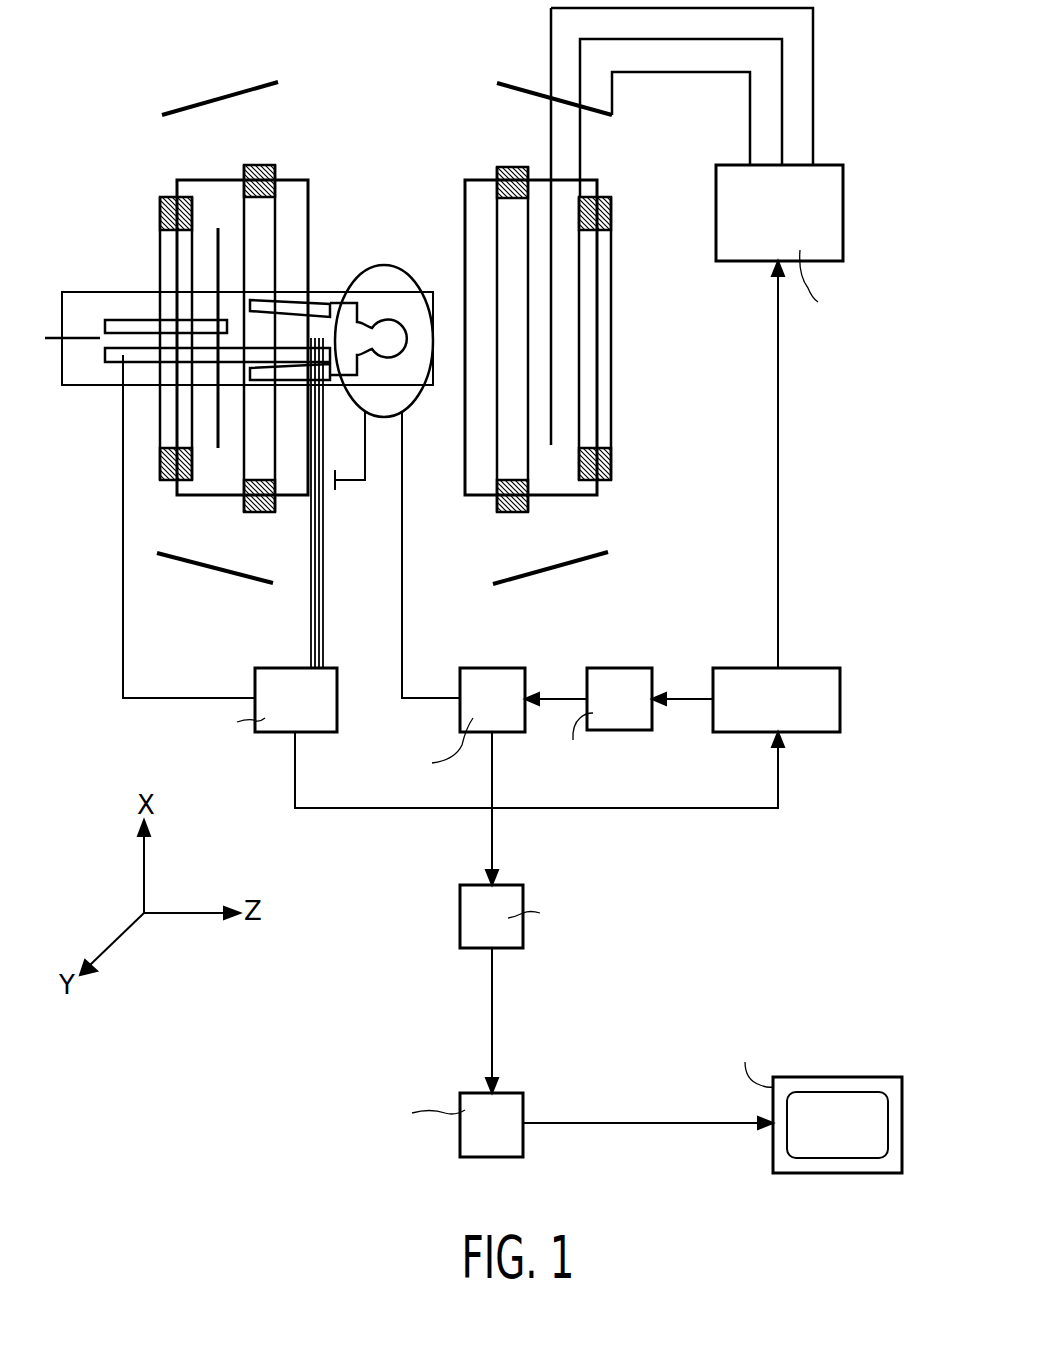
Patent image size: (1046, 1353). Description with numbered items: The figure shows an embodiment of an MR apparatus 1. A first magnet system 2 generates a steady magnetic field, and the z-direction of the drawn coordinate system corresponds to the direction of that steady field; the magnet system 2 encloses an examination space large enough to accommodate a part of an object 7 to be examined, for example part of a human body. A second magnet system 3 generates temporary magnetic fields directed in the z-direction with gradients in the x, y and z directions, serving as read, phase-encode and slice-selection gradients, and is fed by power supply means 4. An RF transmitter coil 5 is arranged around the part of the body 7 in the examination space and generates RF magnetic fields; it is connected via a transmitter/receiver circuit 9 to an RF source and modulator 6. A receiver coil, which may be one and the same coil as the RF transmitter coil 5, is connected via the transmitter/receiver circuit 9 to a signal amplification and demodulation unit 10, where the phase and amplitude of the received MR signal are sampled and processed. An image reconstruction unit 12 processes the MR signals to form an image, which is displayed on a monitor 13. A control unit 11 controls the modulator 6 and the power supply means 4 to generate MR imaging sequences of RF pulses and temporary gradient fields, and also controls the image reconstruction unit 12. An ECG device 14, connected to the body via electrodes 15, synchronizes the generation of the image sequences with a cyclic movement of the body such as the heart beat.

The MR apparatus 1 is at (274, 1003).
The first magnet system 2 is at (263, 165).
The second magnet system 3 is at (200, 108).
The power supply means 4 is at (749, 252).
The RF transmitter coil 5 is at (397, 265).
The RF source and modulator 6 is at (638, 668).
The object to be examined 7 is at (325, 303).
The transmitter/receiver circuit 9 is at (483, 668).
The signal amplification and demodulation unit 10 is at (458, 915).
The control unit 11 is at (817, 667).
The image reconstruction unit 12 is at (508, 1103).
The monitor 13 is at (810, 1078).
The ECG device 14 is at (273, 732).
The electrodes 15 is at (307, 643).